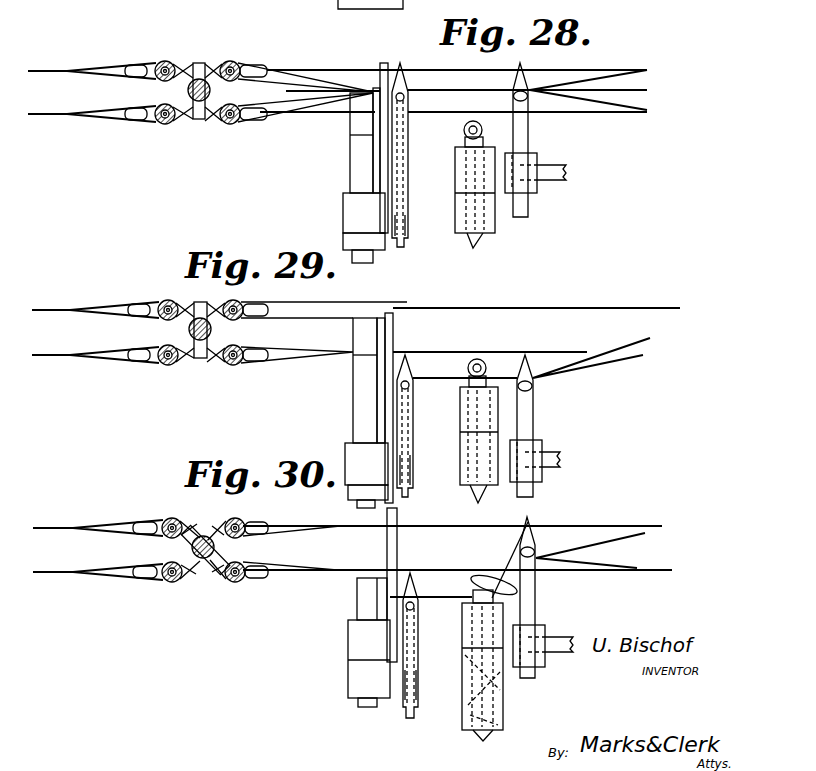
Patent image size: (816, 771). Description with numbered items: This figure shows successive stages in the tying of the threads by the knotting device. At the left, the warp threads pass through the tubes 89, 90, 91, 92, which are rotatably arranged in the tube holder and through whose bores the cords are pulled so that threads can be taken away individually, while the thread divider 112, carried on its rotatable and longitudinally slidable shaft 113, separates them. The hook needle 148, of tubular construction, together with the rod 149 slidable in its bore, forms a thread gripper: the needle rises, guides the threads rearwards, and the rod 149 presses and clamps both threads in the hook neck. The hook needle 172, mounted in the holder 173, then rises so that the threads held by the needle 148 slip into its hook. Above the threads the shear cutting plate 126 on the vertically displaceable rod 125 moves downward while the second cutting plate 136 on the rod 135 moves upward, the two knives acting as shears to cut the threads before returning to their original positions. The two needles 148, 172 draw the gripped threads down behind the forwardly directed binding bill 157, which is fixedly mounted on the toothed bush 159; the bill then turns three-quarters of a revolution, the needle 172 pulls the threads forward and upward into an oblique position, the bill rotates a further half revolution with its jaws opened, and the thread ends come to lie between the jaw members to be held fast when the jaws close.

In FIG. 28, the tube 89 is at (165, 61).
In FIG. 29, the tube 89 is at (165, 303).
In FIG. 30, the tube 89 is at (168, 521).
In FIG. 28, the tube 90 is at (234, 62).
In FIG. 29, the tube 90 is at (243, 304).
In FIG. 30, the tube 90 is at (244, 521).
In FIG. 28, the tube 91 is at (163, 125).
In FIG. 29, the tube 91 is at (175, 364).
In FIG. 30, the tube 91 is at (170, 584).
In FIG. 28, the tube 92 is at (233, 125).
In FIG. 29, the tube 92 is at (236, 365).
In FIG. 30, the tube 92 is at (240, 583).
In FIG. 28, the thread divider 112 is at (197, 121).
In FIG. 29, the thread divider 112 is at (207, 360).
In FIG. 30, the thread divider 112 is at (194, 556).
In FIG. 28, the shaft 113 is at (210, 90).
In FIG. 29, the shaft 113 is at (190, 329).
In FIG. 30, the shaft 113 is at (216, 550).
In FIG. 28, the rod 125 is at (378, 243).
In FIG. 29, the rod 125 is at (358, 458).
In FIG. 30, the rod 125 is at (360, 678).
In FIG. 28, the shear cutting plate 126 is at (389, 92).
In FIG. 29, the shear cutting plate 126 is at (394, 329).
In FIG. 28, the rod 135 is at (352, 170).
In FIG. 29, the rod 135 is at (366, 379).
In FIG. 30, the rod 135 is at (375, 594).
In FIG. 28, the cutting plate 136 is at (376, 100).
In FIG. 29, the cutting plate 136 is at (378, 325).
In FIG. 30, the cutting plate 136 is at (386, 588).
In FIG. 28, the hook needle 148 is at (404, 83).
In FIG. 29, the hook needle 148 is at (412, 372).
In FIG. 30, the hook needle 148 is at (409, 587).
In FIG. 28, the rod 149 is at (404, 217).
In FIG. 29, the rod 149 is at (412, 458).
In FIG. 30, the rod 149 is at (416, 674).
In FIG. 28, the binding bill 157 is at (463, 141).
In FIG. 29, the binding bill 157 is at (469, 377).
In FIG. 30, the binding bill 157 is at (473, 598).
In FIG. 28, the bush 159 is at (487, 238).
In FIG. 29, the bush 159 is at (470, 498).
In FIG. 30, the bush 159 is at (496, 734).
In FIG. 28, the hook needle 172 is at (516, 73).
In FIG. 29, the hook needle 172 is at (531, 366).
In FIG. 30, the hook needle 172 is at (531, 534).
In FIG. 28, the holder 173 is at (553, 169).
In FIG. 29, the holder 173 is at (548, 456).
In FIG. 30, the holder 173 is at (563, 639).